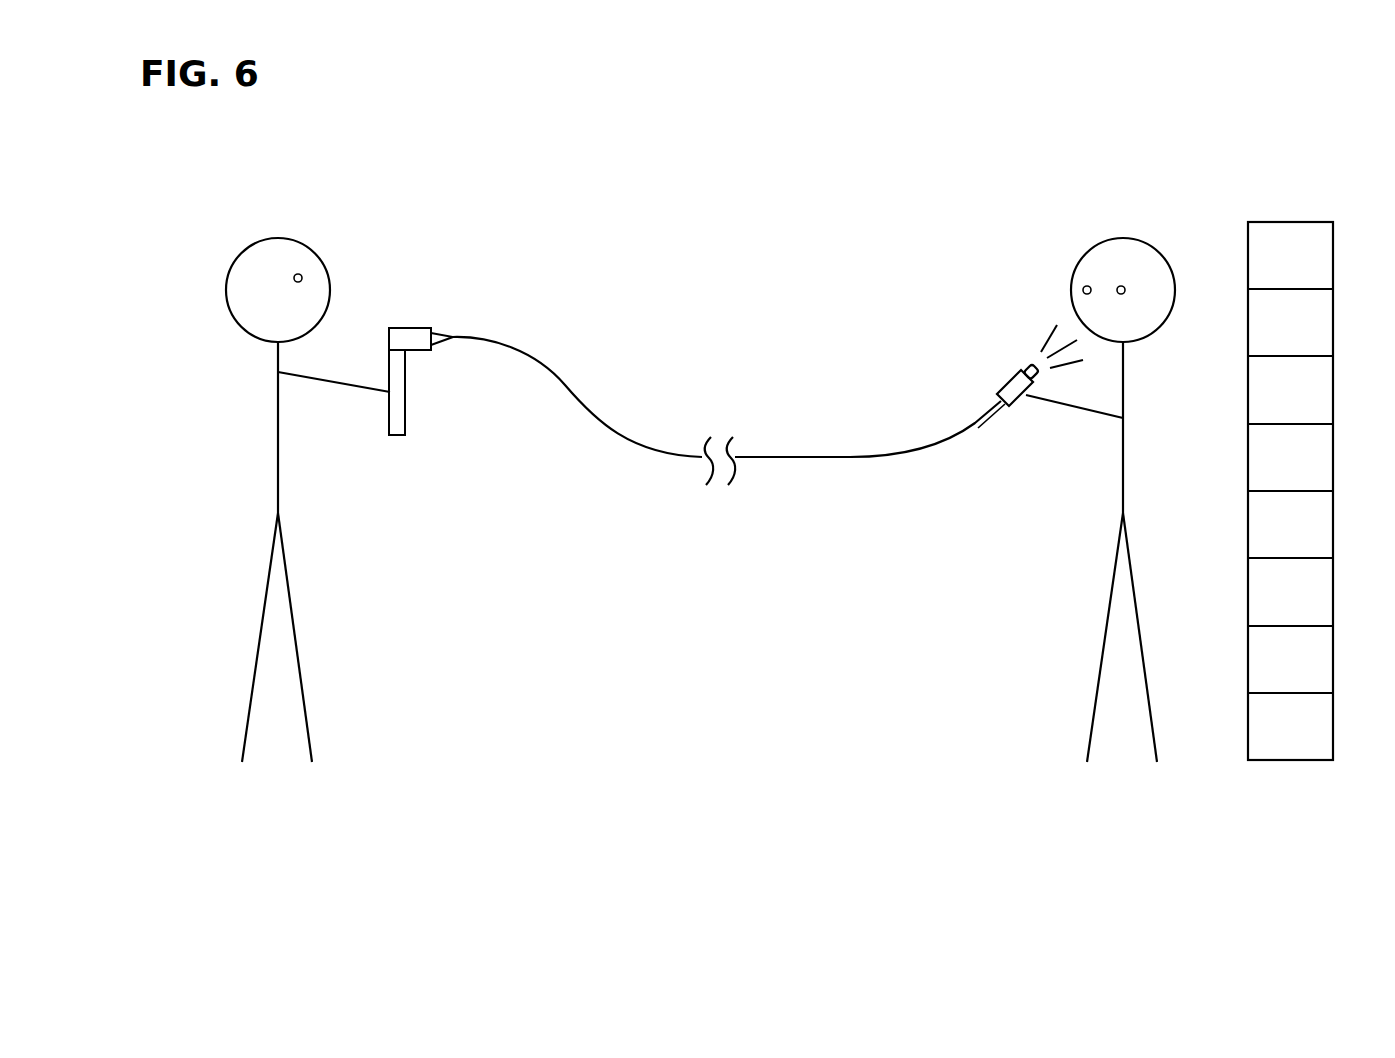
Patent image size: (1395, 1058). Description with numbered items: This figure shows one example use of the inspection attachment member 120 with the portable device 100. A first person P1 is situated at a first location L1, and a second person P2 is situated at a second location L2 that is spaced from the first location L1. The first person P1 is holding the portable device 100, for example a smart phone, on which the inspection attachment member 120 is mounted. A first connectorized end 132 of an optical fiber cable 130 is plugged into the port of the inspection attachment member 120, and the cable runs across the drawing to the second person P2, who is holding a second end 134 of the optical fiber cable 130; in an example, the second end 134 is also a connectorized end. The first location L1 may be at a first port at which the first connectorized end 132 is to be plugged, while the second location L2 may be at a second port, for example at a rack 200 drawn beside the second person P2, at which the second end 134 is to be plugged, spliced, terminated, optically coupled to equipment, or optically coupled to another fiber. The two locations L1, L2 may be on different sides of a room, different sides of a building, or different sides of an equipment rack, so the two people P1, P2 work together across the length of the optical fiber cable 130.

The portable device 100 is at (400, 440).
The inspection attachment member 120 is at (411, 326).
The optical fiber cable 130 is at (586, 402).
The first connectorized end 132 is at (447, 334).
The second end 134 is at (1012, 379).
The rack 200 is at (1334, 220).
The first person P1 is at (268, 430).
The second person P2 is at (1079, 240).
The first location L1 is at (285, 827).
The second location L2 is at (1137, 827).